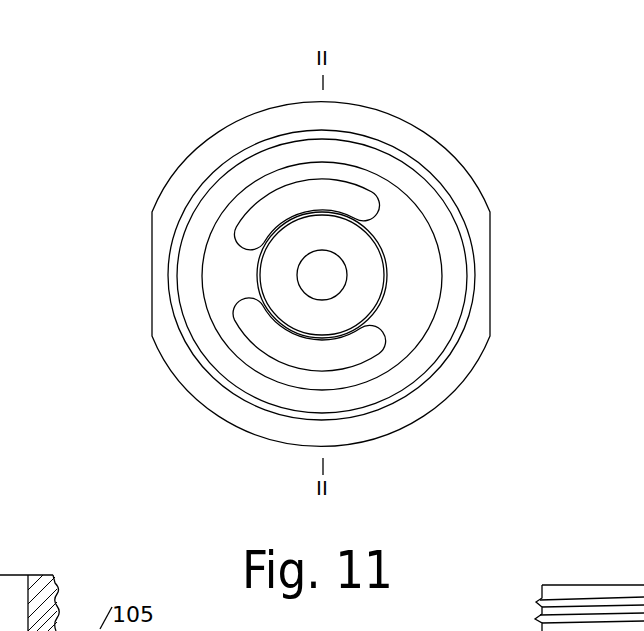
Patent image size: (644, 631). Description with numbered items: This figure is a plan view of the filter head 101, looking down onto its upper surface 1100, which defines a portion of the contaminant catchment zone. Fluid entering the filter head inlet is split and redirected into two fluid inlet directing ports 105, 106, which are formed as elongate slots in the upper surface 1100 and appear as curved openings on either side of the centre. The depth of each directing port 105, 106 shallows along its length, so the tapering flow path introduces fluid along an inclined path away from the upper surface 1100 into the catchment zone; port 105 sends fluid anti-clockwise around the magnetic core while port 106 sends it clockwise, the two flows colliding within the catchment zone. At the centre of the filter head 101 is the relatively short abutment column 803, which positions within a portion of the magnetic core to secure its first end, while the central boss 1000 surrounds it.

The filter head 101 is at (430, 130).
The fluid inlet directing port 105 is at (256, 218).
The fluid inlet directing port 106 is at (255, 327).
The central hub 1000 is at (319, 264).
The abutment column 803 is at (370, 278).
The upper surface 1100 is at (407, 261).